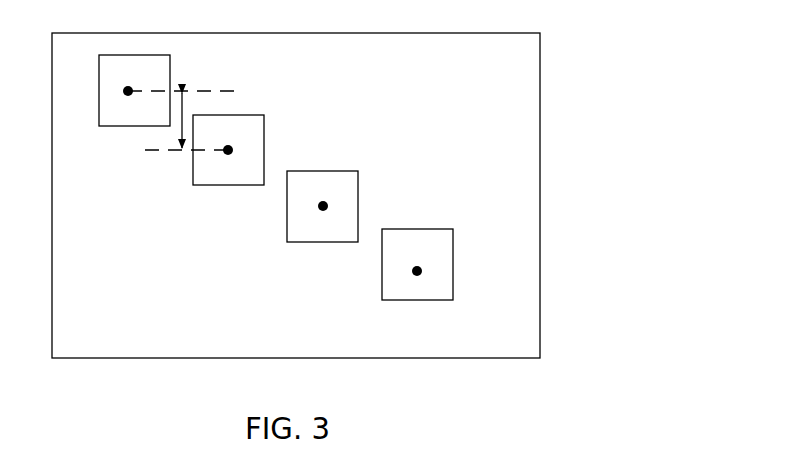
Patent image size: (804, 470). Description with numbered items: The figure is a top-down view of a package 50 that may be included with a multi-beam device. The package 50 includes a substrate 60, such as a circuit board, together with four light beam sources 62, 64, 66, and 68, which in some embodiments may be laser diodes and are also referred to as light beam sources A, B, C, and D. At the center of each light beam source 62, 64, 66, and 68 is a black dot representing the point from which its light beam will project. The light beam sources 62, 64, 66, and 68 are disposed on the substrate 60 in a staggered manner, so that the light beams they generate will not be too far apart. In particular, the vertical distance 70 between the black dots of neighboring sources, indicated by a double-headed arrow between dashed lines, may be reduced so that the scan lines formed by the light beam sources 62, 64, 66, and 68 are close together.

The package 50 is at (352, 206).
The substrate 60 is at (394, 33).
The light beam source 62 is at (170, 78).
The light beam source 64 is at (264, 138).
The light beam source 66 is at (358, 194).
The light beam source 68 is at (453, 252).
The vertical distance 70 is at (176, 129).